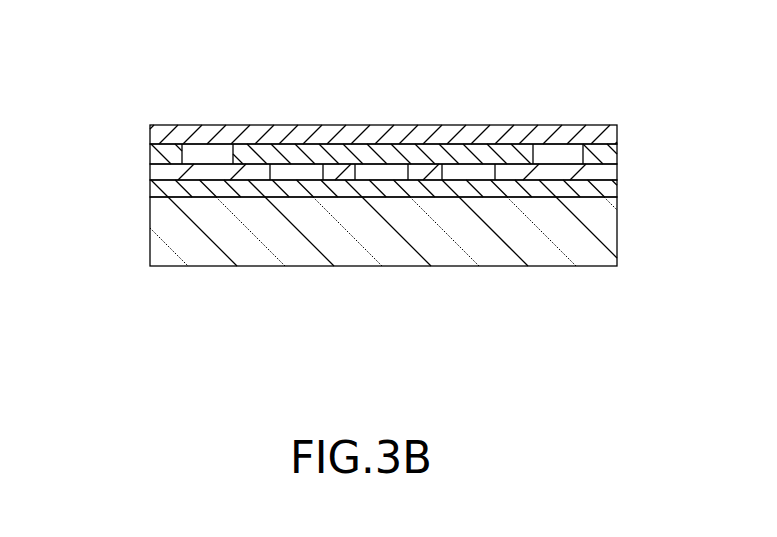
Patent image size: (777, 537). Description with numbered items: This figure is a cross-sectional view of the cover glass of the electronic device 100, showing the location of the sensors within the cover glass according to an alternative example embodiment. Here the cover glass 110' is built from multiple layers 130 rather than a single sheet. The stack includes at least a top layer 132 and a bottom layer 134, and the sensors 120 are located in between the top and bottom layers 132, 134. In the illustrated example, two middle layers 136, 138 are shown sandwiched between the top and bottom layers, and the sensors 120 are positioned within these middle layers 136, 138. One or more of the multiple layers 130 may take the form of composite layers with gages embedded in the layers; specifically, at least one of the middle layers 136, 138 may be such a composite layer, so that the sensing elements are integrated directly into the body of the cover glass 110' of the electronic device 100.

The electronic device 100 is at (389, 167).
The cover glass 110' is at (386, 157).
The sensors 120 is at (218, 148).
The multiple layers 130 is at (417, 152).
The top layer 132 is at (617, 133).
The bottom layer 134 is at (617, 190).
The middle layer 136 is at (617, 151).
The middle layer 138 is at (617, 171).